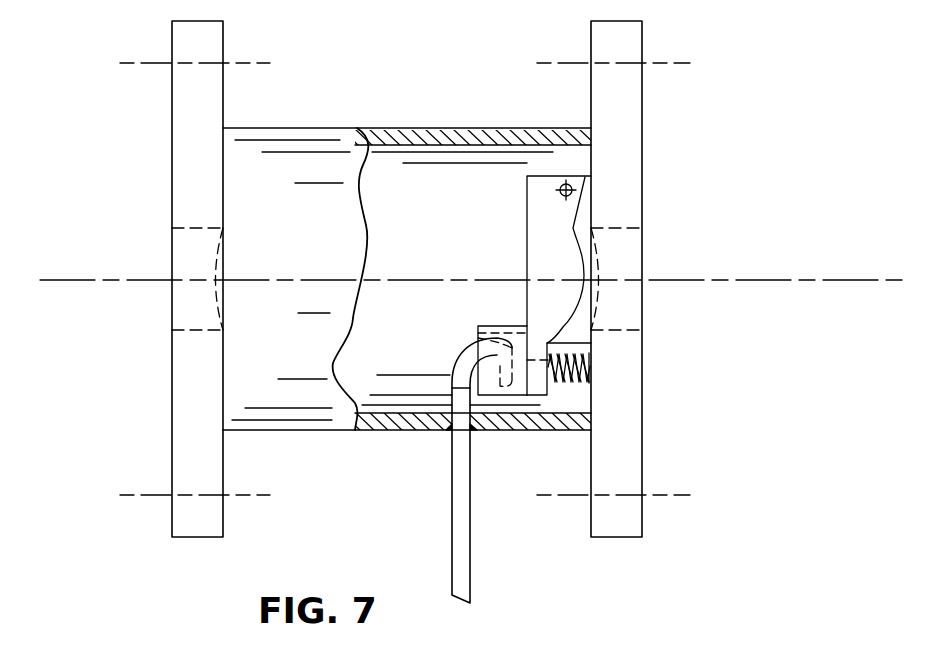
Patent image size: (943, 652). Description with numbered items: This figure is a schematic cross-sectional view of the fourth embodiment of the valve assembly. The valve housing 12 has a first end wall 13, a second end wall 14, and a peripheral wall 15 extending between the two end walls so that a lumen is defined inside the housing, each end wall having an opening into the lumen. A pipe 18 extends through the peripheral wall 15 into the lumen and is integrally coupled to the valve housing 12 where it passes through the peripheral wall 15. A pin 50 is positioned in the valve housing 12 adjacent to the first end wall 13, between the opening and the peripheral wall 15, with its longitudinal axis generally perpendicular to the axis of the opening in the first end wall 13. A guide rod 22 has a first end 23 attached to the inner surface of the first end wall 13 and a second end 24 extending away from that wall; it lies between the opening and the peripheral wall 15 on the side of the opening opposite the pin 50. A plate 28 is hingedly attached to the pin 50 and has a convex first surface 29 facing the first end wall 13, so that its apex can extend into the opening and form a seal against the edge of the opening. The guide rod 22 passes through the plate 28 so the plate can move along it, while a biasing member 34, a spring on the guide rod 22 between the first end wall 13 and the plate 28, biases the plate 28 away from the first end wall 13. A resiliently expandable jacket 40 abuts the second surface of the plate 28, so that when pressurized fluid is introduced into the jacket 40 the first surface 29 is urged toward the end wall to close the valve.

The valve housing 12 is at (224, 128).
The first end wall 13 is at (643, 32).
The second end wall 14 is at (173, 400).
The peripheral wall 15 is at (447, 136).
The pipe 18 is at (463, 559).
The guide rod 22 is at (578, 364).
The first end 23 is at (577, 384).
The second end 24 is at (543, 376).
The plate 28 is at (562, 265).
The first surface 29 is at (563, 328).
The biasing member 34 is at (577, 384).
The resiliently expandable jacket 40 is at (458, 359).
The pin 50 is at (569, 190).